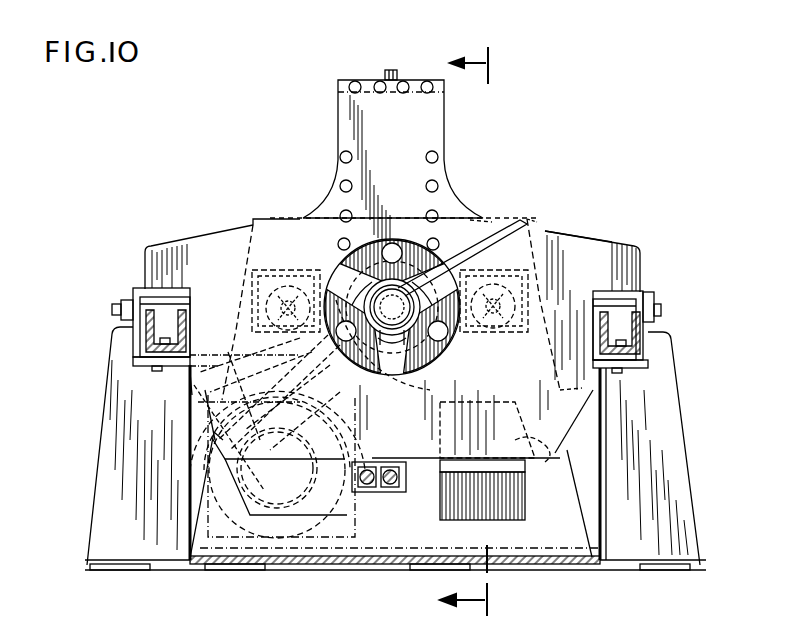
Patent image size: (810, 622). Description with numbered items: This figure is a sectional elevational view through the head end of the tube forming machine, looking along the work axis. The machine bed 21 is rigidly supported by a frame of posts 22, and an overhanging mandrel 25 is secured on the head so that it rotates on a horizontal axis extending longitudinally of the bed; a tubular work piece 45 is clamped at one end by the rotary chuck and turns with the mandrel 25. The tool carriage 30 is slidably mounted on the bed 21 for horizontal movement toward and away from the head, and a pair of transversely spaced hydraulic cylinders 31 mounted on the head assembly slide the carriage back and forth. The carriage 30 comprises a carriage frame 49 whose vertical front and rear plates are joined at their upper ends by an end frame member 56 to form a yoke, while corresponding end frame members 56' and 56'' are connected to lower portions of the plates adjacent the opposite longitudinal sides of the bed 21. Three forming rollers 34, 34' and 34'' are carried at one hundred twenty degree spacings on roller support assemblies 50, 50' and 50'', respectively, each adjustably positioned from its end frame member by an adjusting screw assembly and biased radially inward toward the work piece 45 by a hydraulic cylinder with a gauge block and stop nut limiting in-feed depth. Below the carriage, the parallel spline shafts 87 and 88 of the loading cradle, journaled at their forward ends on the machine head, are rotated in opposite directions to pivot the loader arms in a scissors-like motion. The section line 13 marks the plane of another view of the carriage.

The section line 13— 13 is at (482, 332).
The machine bed 21 is at (632, 298).
The posts 22 is at (120, 419).
The mandrel 25 is at (404, 305).
The tool carriage 30 is at (332, 128).
The hydraulic cylinders 31 is at (290, 270).
The forming roller 34 is at (434, 275).
The forming roller 34' is at (390, 357).
The forming roller 34'' is at (343, 291).
The tubular work piece 45 is at (530, 220).
The carriage frame 49 is at (590, 250).
The roller support assembly 50 is at (358, 283).
The roller support assembly 50' is at (446, 365).
The roller support assembly 50'' is at (277, 403).
The end frame member 56 is at (330, 69).
The end frame member 56' is at (554, 433).
The end frame member 56'' is at (155, 383).
The spline shaft 87 is at (398, 494).
The spline shaft 88 is at (367, 494).